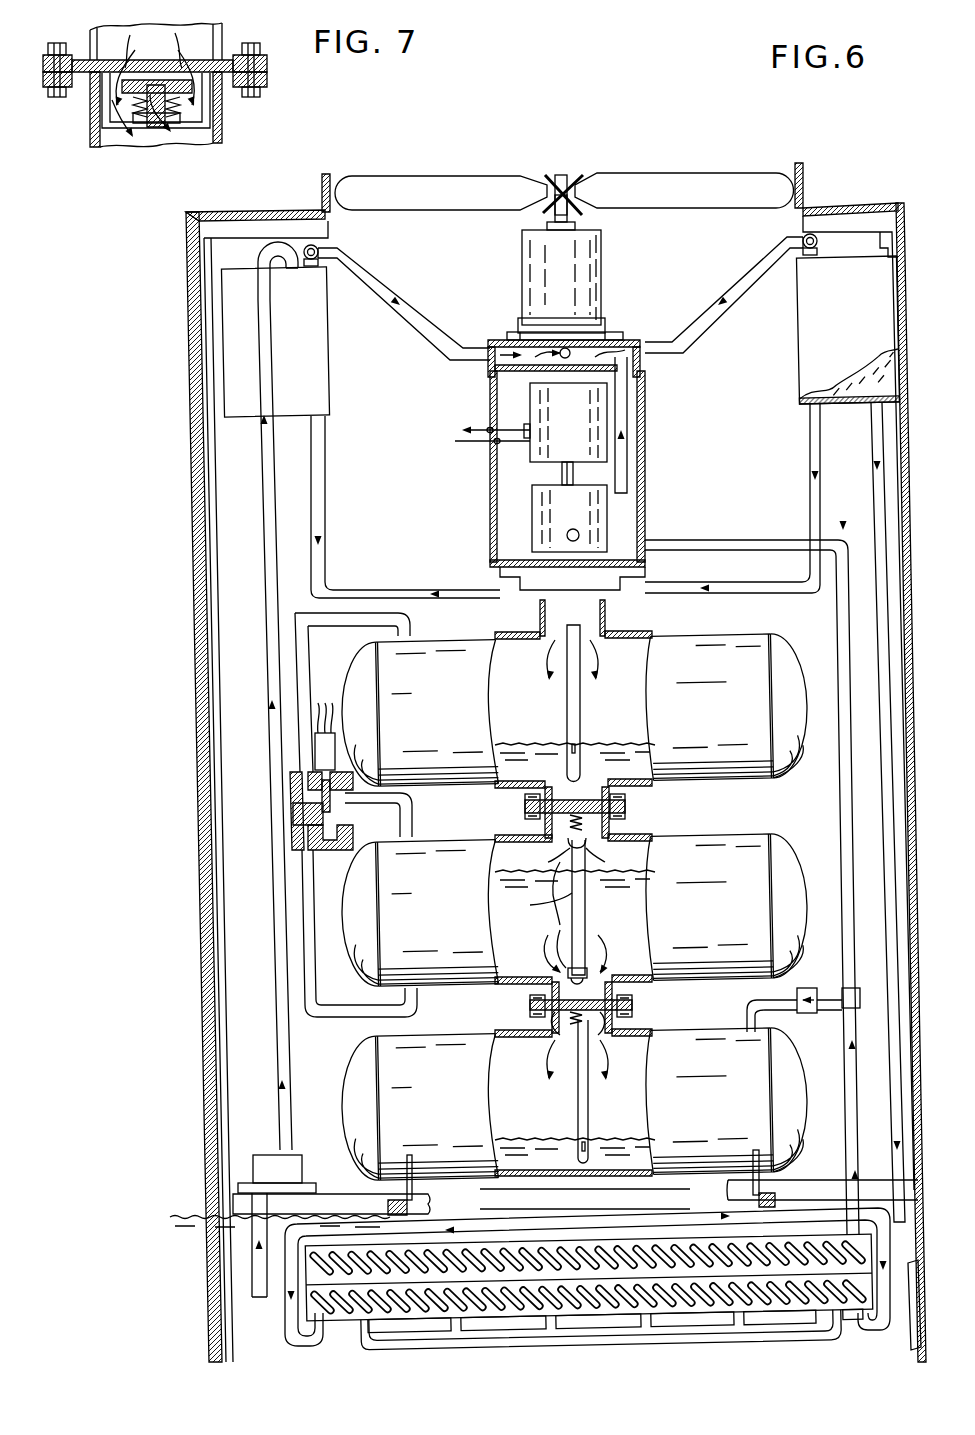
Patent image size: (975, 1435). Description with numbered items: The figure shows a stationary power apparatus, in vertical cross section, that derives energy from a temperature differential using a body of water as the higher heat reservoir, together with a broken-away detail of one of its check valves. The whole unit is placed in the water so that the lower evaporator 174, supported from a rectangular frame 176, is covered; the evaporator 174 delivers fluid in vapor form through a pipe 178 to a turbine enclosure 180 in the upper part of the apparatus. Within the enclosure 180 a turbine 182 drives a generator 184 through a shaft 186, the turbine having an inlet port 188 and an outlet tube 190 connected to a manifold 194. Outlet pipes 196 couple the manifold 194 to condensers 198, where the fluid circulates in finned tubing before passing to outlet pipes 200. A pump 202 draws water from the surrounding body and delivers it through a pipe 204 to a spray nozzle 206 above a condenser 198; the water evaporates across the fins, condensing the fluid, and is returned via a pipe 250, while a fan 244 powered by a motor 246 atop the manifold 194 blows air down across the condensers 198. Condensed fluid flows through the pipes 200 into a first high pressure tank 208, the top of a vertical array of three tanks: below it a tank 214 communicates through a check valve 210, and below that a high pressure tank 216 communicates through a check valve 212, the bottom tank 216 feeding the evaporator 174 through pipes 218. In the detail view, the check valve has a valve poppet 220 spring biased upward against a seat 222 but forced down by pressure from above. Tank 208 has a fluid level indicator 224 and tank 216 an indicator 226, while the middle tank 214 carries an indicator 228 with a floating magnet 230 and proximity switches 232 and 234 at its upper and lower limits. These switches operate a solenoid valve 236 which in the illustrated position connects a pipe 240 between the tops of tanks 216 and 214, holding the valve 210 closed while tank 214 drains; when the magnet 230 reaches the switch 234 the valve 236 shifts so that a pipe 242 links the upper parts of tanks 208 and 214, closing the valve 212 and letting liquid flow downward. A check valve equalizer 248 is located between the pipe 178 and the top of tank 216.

In FIG. 6, the lower evaporator 174 is at (350, 1318).
In FIG. 6, the rectangular frame 176 is at (232, 1220).
In FIG. 6, the pipe 178 is at (850, 1073).
In FIG. 6, the turbine enclosure 180 is at (650, 482).
In FIG. 6, the turbine 182 is at (536, 510).
In FIG. 6, the generator 184 is at (530, 400).
In FIG. 6, the shaft 186 is at (562, 470).
In FIG. 6, the inlet port 188 is at (575, 538).
In FIG. 6, the outlet tube 190 is at (628, 390).
In FIG. 6, the manifold 194 is at (615, 350).
In FIG. 6, the outlet pipes 196 is at (717, 312).
In FIG. 6, the condensers 198 is at (812, 350).
In FIG. 6, the outlet pipes 200 is at (813, 442).
In FIG. 6, the pump 202 is at (264, 1152).
In FIG. 6, the pipe 204 is at (262, 528).
In FIG. 6, the spray nozzle 206 is at (282, 240).
In FIG. 6, the first high pressure tank 208 is at (460, 707).
In FIG. 7, the check valve 210 is at (236, 117).
In FIG. 6, the check valve 210 is at (591, 786).
In FIG. 6, the check valve 212 is at (607, 985).
In FIG. 6, the tank 214 is at (460, 897).
In FIG. 6, the high pressure tank 216 is at (475, 1094).
In FIG. 6, the pipes 218 is at (663, 1207).
In FIG. 7, the valve poppet 220 is at (138, 120).
In FIG. 7, the seat 222 is at (225, 35).
In FIG. 6, the fluid level indicator 224 is at (585, 680).
In FIG. 6, the fluid level indicator 226 is at (592, 1092).
In FIG. 6, the indicator 228 is at (586, 905).
In FIG. 6, the floating magnet 230 is at (536, 894).
In FIG. 6, the proximity switch 232 is at (600, 852).
In FIG. 6, the proximity switch 234 is at (586, 947).
In FIG. 6, the solenoid valve 236 is at (298, 807).
In FIG. 6, the pipe 240 is at (303, 892).
In FIG. 6, the pipe 242 is at (297, 724).
In FIG. 6, the fan 244 is at (484, 192).
In FIG. 6, the motor 246 is at (522, 268).
In FIG. 6, the check valve equalizer 248 is at (805, 990).
In FIG. 6, the pipe 250 is at (874, 485).